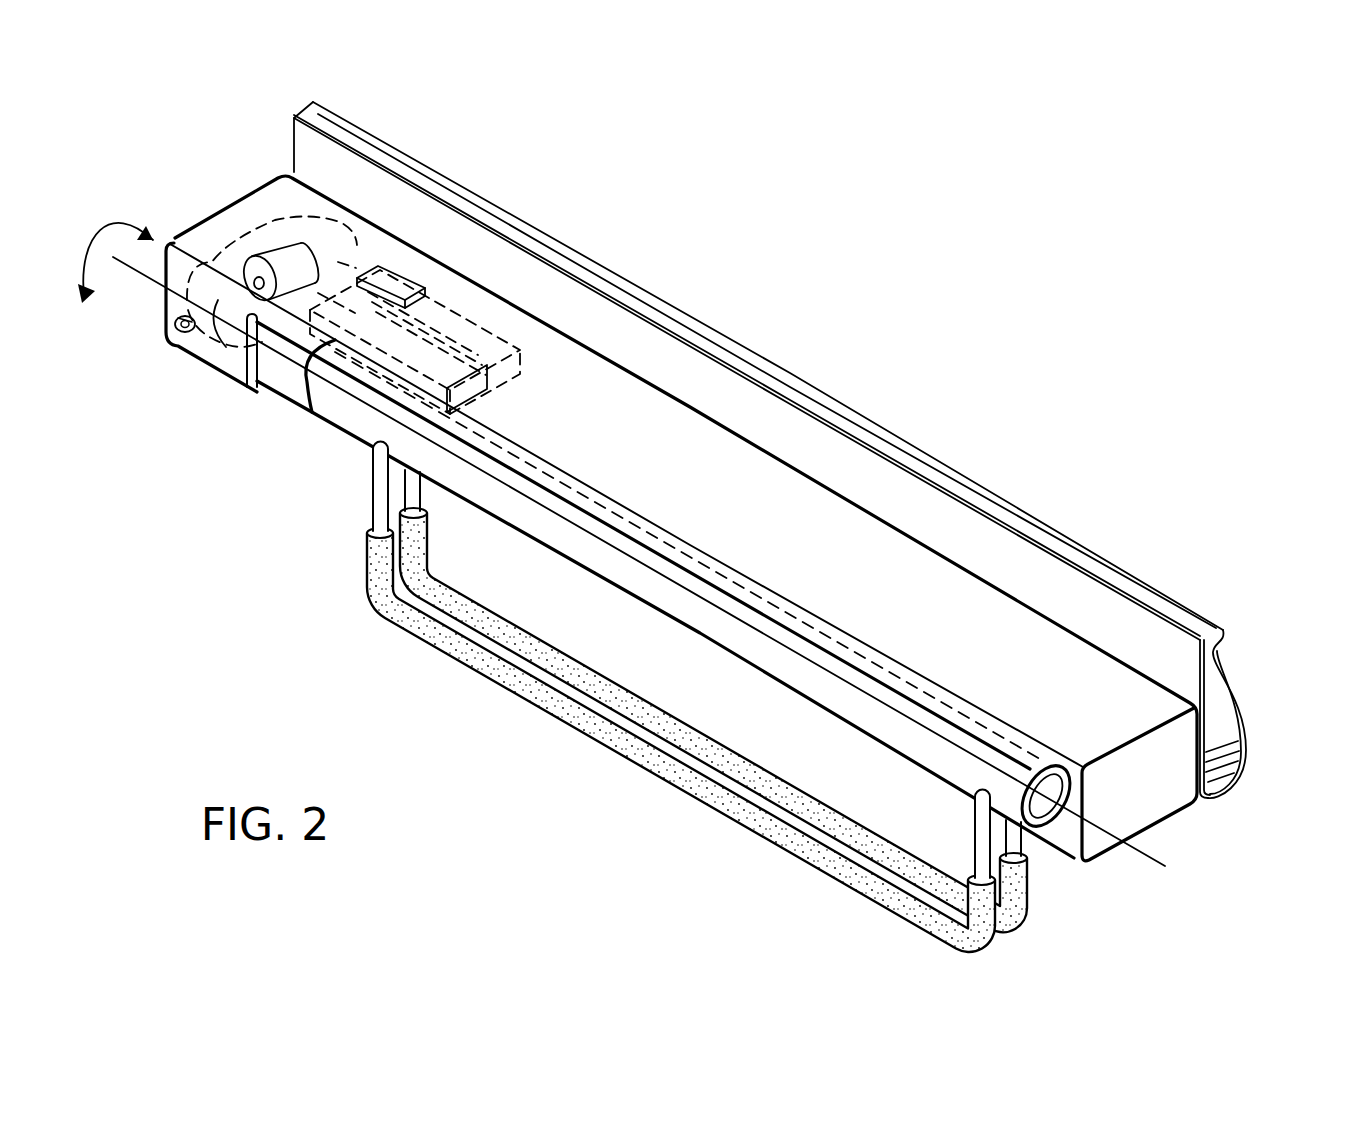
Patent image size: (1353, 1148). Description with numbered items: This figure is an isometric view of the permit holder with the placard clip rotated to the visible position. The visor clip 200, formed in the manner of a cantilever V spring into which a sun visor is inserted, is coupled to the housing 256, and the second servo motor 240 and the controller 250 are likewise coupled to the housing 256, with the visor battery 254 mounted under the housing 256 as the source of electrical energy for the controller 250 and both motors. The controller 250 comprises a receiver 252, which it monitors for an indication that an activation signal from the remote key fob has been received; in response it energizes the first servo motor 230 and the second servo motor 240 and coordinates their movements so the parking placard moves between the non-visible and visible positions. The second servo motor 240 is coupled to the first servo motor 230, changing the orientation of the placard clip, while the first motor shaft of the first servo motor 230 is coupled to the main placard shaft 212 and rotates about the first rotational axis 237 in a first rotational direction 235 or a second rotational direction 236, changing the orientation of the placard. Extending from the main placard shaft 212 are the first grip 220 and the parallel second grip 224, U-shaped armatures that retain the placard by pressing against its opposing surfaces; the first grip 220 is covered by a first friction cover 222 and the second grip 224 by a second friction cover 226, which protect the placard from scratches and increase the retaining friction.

The visor clip 200 is at (1222, 667).
The main placard shaft 212 is at (342, 410).
The first grip 220 is at (380, 514).
The first friction cover 222 is at (608, 690).
The second grip 224 is at (428, 514).
The second friction cover 226 is at (497, 657).
The first servo motor 230 is at (227, 333).
The first rotational direction 235 is at (106, 292).
The second rotational direction 236 is at (198, 276).
The first rotational axis 237 is at (1137, 855).
The second servo motor 240 is at (283, 256).
The controller 250 is at (474, 300).
The receiver 252 is at (403, 270).
The visor battery 254 is at (488, 383).
The housing 256 is at (1036, 647).